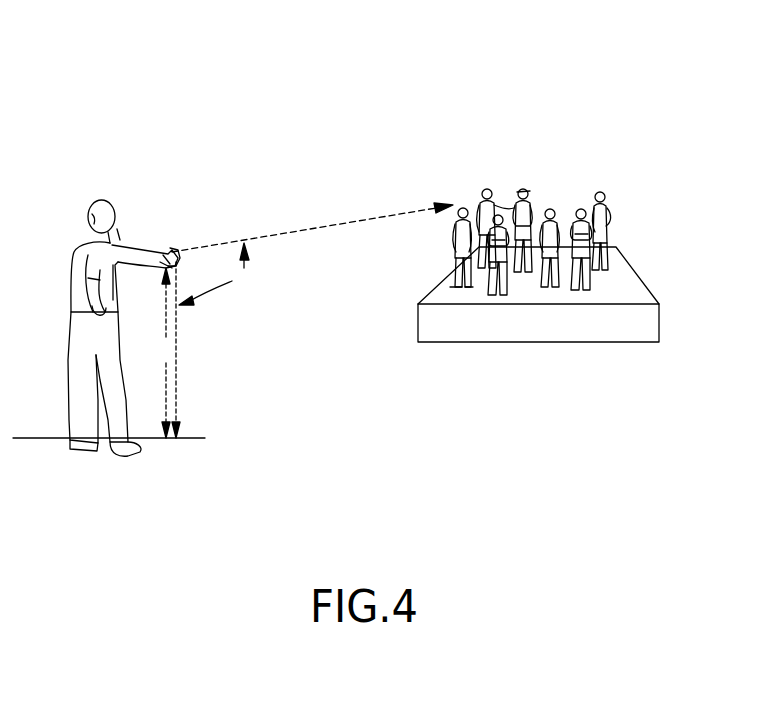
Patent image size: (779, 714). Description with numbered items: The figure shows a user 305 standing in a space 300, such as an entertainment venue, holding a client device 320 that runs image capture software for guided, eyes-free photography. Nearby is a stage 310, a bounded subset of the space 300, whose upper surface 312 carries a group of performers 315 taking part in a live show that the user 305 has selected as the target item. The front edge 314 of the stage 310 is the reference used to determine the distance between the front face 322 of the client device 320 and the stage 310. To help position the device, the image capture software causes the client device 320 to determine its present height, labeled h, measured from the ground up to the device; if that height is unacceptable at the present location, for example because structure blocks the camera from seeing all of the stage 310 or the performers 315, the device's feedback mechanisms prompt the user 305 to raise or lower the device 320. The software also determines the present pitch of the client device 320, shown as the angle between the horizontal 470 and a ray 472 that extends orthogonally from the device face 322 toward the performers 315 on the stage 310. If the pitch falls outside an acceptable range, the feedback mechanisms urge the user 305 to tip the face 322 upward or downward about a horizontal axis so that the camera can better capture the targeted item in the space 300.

The space 300 is at (0, 52).
The user 305 is at (72, 290).
The stage 310 is at (662, 307).
The upper surface 312 is at (622, 290).
The front edge 314 is at (482, 335).
The performers 315 is at (578, 209).
The client device 320 is at (157, 272).
The front face 322 is at (175, 262).
The horizontal 470 is at (178, 380).
The ray 472 is at (286, 233).